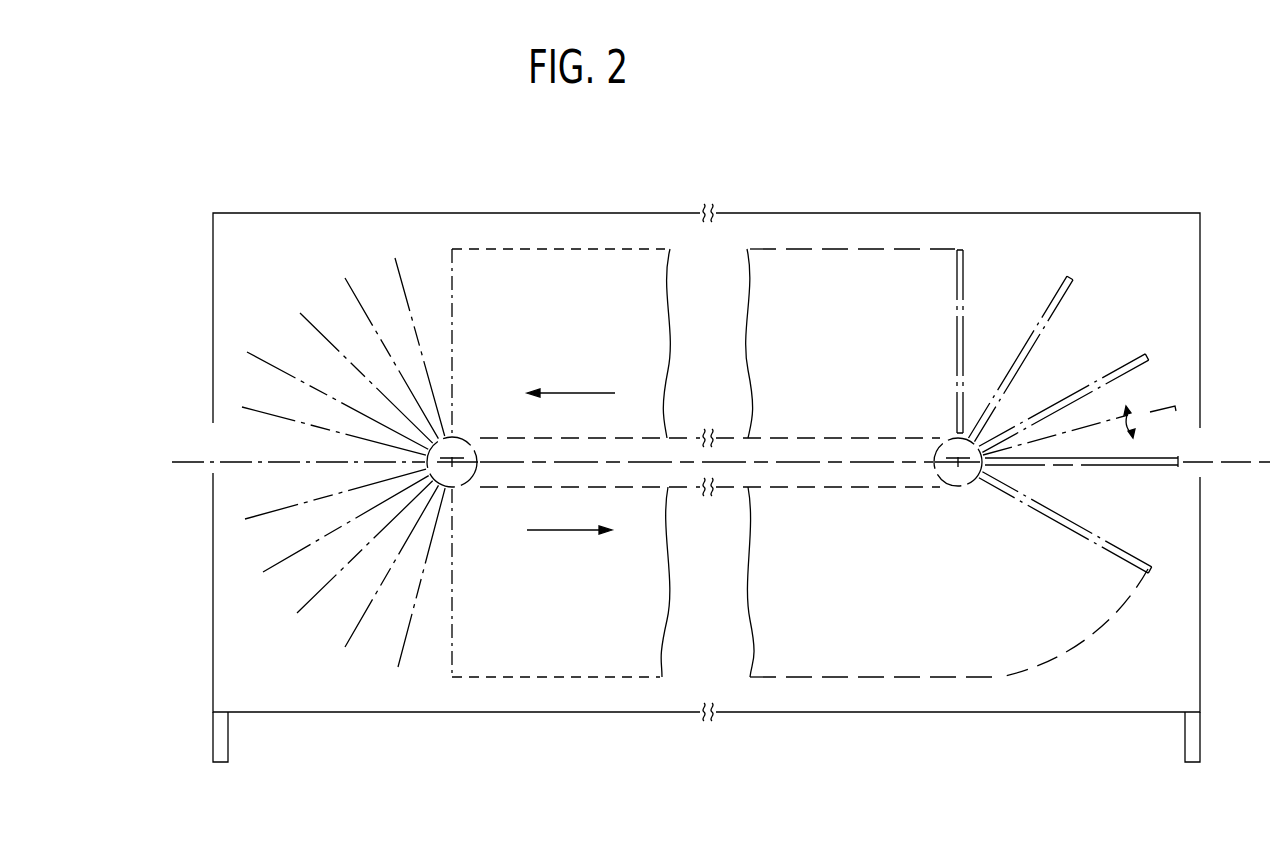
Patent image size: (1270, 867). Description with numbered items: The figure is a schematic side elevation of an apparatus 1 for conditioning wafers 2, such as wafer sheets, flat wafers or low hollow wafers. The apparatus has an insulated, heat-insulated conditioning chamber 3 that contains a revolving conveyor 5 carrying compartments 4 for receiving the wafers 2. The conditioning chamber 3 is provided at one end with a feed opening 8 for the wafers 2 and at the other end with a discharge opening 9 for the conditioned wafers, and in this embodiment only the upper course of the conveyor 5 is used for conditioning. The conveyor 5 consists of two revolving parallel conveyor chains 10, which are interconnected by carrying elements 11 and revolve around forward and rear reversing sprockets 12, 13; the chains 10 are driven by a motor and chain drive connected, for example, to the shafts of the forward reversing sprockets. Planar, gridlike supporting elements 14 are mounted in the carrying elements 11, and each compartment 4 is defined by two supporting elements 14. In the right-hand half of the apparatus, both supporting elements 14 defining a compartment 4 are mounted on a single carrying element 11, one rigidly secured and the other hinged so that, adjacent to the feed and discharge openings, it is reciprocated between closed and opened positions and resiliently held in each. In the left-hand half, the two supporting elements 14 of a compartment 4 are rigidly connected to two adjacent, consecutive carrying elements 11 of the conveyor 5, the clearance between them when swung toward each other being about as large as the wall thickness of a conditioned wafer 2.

The apparatus 1 is at (966, 187).
The wafer 2 is at (1106, 468).
The conditioning chamber 3 is at (1127, 233).
The compartment 4 is at (438, 305).
The revolving conveyor 5 is at (677, 455).
The feed opening 8 is at (1215, 442).
The discharge opening 9 is at (201, 438).
The conveyor chain 10 is at (792, 437).
The carrying element 11 is at (452, 493).
The forward reversing sprocket 12 is at (953, 440).
The rear reversing sprocket 13 is at (460, 448).
The supporting element 14 is at (345, 278).